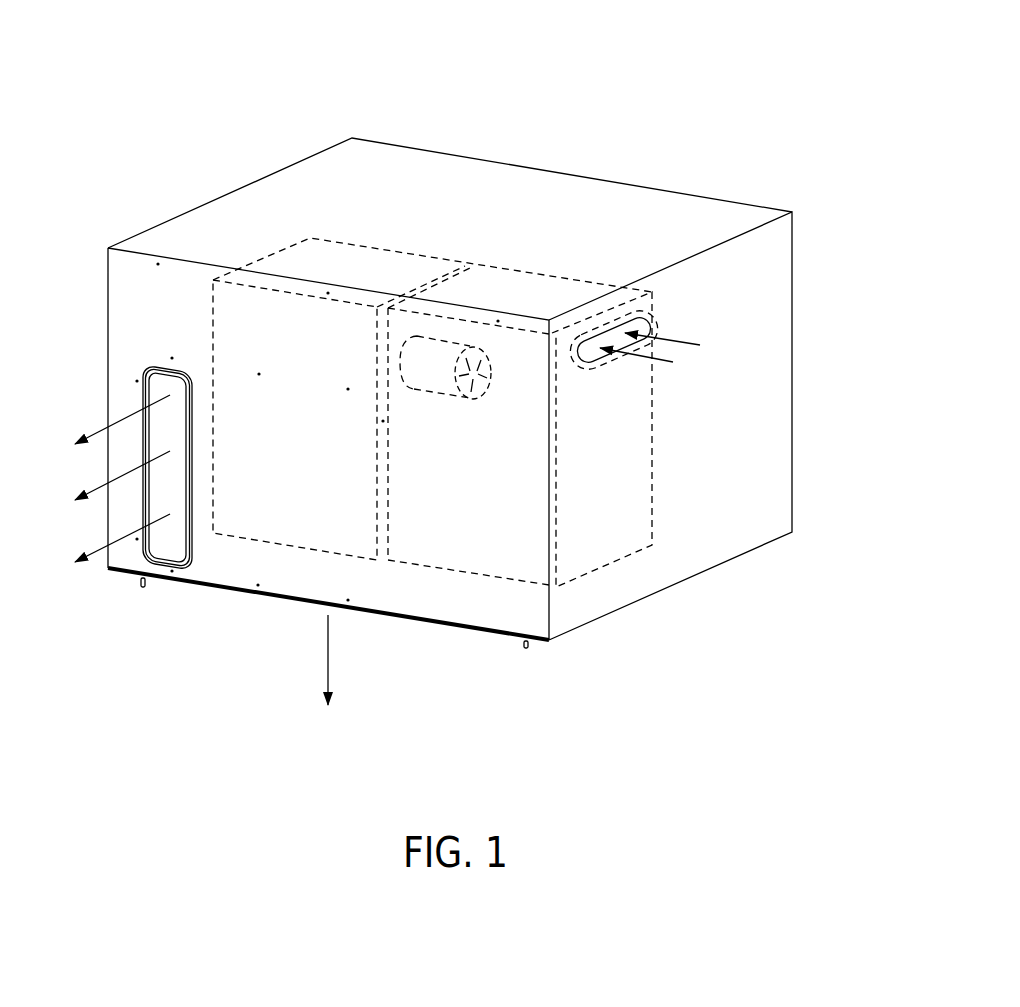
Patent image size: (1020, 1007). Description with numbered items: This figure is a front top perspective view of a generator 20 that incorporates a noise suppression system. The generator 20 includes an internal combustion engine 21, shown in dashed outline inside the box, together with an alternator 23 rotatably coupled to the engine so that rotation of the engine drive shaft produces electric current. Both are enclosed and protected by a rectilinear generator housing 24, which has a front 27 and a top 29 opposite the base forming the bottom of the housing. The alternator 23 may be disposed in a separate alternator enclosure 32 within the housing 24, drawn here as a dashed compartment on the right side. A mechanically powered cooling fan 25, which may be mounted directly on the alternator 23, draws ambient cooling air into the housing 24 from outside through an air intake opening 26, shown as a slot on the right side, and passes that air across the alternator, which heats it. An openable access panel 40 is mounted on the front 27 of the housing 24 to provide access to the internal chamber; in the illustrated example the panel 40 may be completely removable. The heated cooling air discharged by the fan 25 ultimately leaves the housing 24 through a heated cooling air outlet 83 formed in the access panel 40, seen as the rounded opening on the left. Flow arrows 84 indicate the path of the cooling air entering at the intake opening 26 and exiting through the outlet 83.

The generator 20 is at (183, 177).
The internal combustion engine 21 is at (308, 443).
The alternator 23 is at (452, 341).
The generator housing 24 is at (613, 205).
The cooling fan 25 is at (488, 350).
The air intake opening 26 is at (655, 315).
The front 27 is at (233, 572).
The top 29 is at (452, 180).
The alternator enclosure 32 is at (652, 503).
The access panel 40 is at (125, 280).
The heated cooling air outlet 83 is at (145, 365).
The flow arrows 84 is at (135, 533).